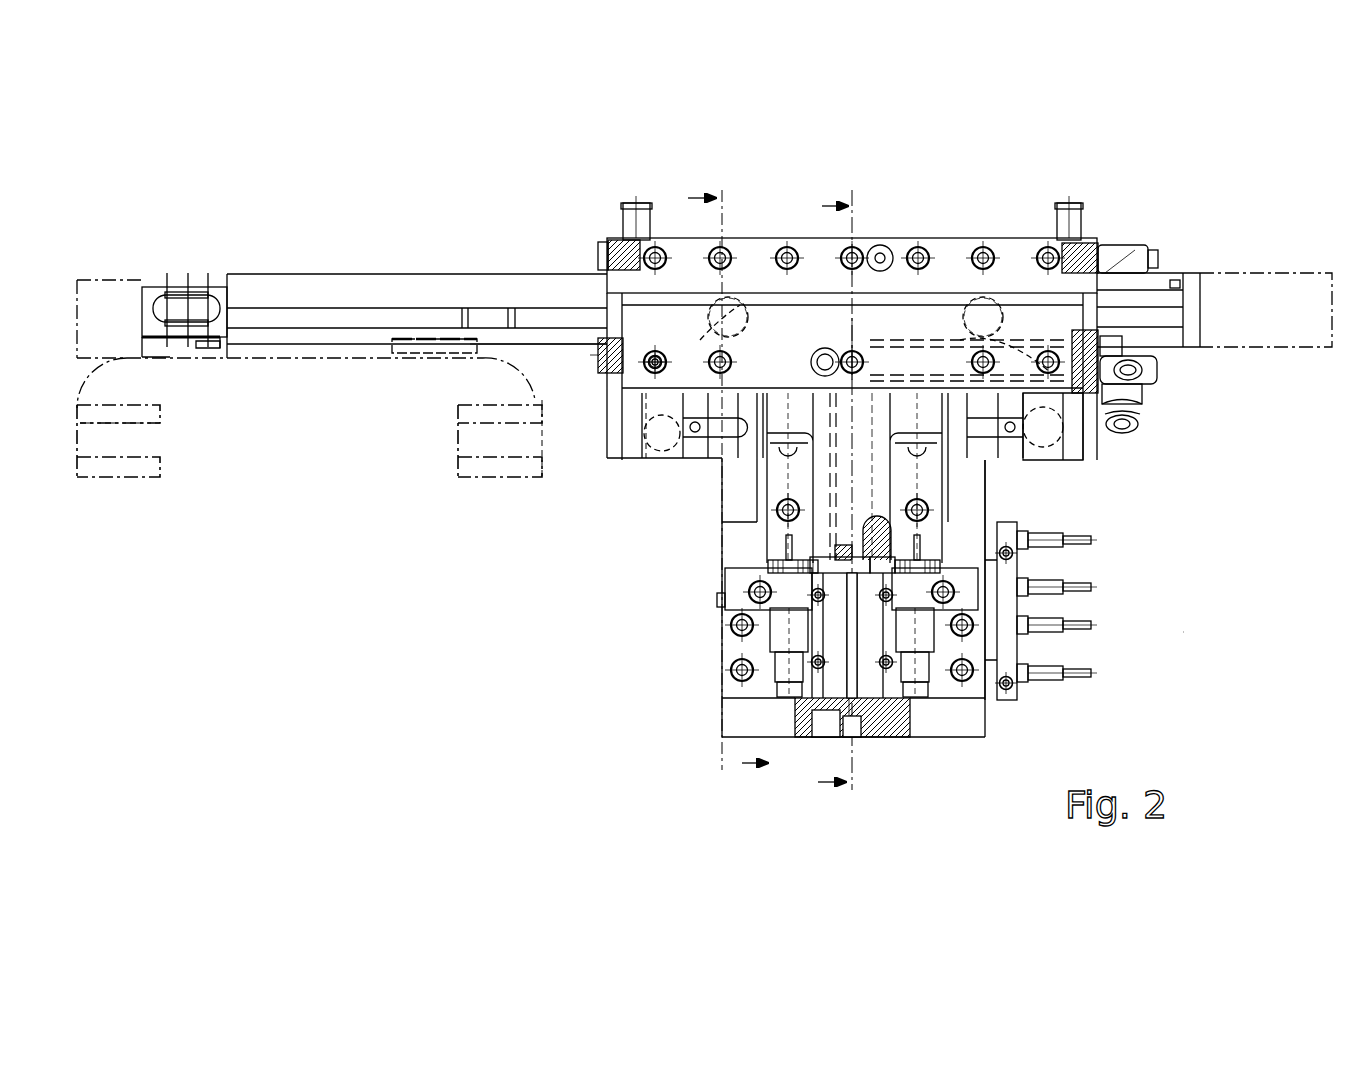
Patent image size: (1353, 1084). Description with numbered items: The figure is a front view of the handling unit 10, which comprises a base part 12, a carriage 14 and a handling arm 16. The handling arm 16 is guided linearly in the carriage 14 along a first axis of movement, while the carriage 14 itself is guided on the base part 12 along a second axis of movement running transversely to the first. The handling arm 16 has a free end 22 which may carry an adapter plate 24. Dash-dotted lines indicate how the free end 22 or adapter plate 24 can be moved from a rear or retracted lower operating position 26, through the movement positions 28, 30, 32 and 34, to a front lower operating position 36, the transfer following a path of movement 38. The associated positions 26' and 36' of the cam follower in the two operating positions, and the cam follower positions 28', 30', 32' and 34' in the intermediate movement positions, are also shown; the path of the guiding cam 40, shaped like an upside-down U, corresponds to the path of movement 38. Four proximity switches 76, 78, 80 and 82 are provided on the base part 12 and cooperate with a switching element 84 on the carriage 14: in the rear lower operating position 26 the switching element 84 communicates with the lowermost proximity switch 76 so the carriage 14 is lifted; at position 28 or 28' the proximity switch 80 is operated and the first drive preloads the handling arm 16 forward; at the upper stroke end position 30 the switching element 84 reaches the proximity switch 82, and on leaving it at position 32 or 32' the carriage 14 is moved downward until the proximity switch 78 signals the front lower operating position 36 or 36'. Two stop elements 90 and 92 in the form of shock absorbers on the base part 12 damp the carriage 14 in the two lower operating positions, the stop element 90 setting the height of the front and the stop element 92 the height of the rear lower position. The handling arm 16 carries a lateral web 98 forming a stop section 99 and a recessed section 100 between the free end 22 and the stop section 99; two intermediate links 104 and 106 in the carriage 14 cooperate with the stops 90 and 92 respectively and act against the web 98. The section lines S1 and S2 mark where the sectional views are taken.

The handling unit 10 is at (1186, 636).
The base part 12 is at (730, 640).
The carriage 14 is at (945, 275).
The handling arm 16 is at (343, 280).
The free end 22 is at (157, 290).
The adapter plate 24 is at (192, 350).
The rear lower operating position 26 is at (547, 478).
The position of the cam follower 26' is at (1091, 447).
The movement position 28 is at (467, 441).
The movement position of the cam follower 28' is at (1092, 395).
The upper stroke end position 30 is at (434, 377).
The position of the cam follower 30' is at (1002, 260).
The movement position 32 is at (220, 376).
The movement position of the cam follower 32' is at (743, 260).
The movement position 34 is at (149, 417).
The movement position of the cam follower 34' is at (665, 453).
The front lower operating position 36 is at (129, 486).
The position of the cam follower 36' is at (654, 454).
The path of movement 38 is at (538, 395).
The guiding cam 40 is at (645, 385).
The proximity switch 76 is at (1060, 677).
The proximity switch 78 is at (1060, 630).
The proximity switch 80 is at (1060, 590).
The proximity switch 82 is at (1060, 545).
The switching element 84 is at (1000, 540).
The stop element 90 is at (780, 630).
The stop element 92 is at (920, 705).
The lateral web 98 is at (265, 315).
The stop section 99 is at (556, 318).
The recessed section 100 is at (490, 318).
The intermediate link 104 is at (770, 443).
The intermediate link 106 is at (930, 445).
The section line S1- S1 is at (828, 494).
The section line S2- S2 is at (719, 480).